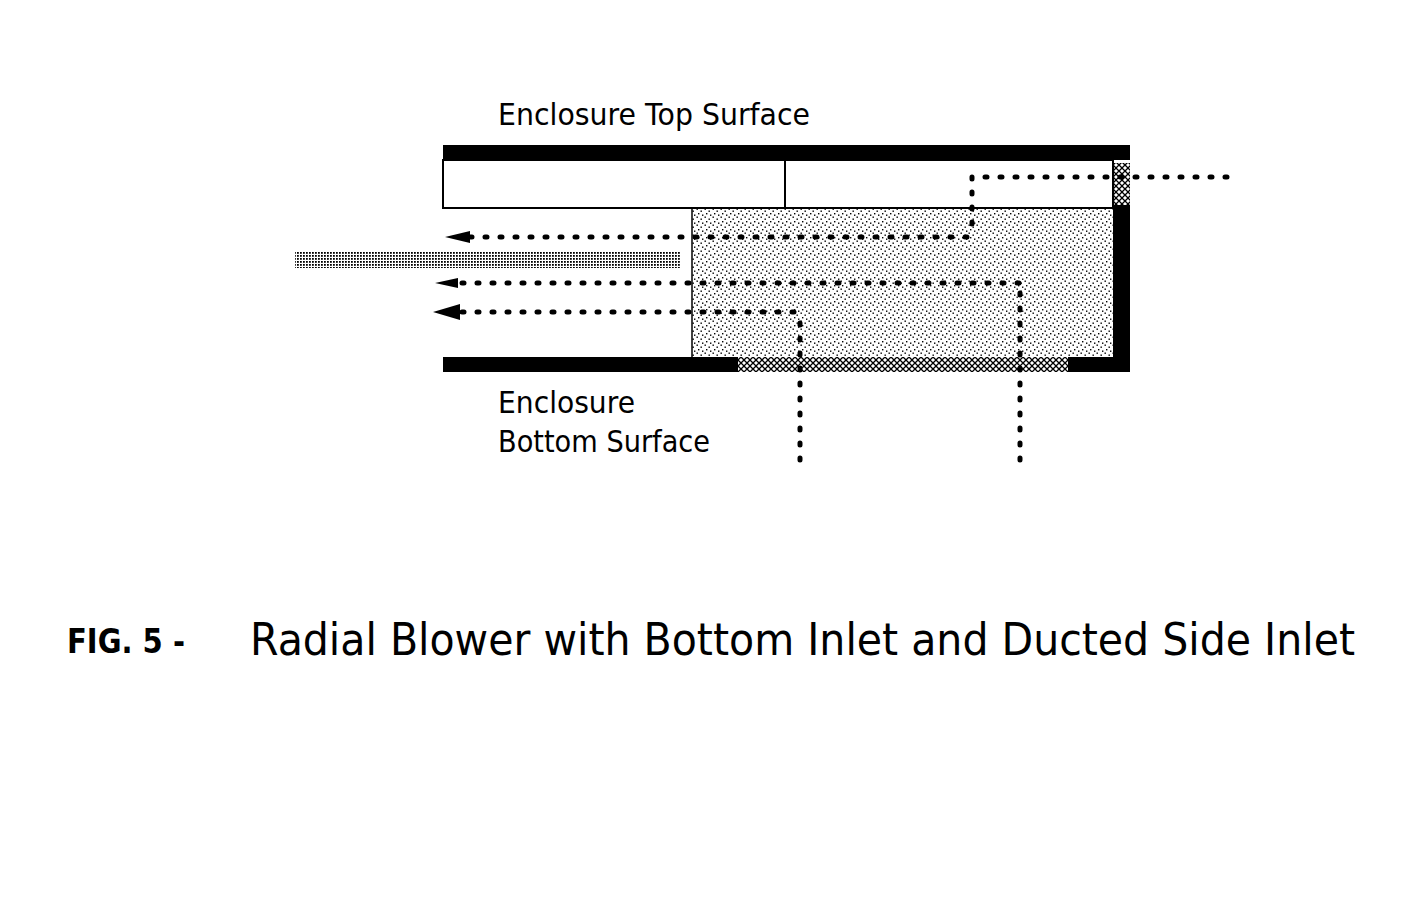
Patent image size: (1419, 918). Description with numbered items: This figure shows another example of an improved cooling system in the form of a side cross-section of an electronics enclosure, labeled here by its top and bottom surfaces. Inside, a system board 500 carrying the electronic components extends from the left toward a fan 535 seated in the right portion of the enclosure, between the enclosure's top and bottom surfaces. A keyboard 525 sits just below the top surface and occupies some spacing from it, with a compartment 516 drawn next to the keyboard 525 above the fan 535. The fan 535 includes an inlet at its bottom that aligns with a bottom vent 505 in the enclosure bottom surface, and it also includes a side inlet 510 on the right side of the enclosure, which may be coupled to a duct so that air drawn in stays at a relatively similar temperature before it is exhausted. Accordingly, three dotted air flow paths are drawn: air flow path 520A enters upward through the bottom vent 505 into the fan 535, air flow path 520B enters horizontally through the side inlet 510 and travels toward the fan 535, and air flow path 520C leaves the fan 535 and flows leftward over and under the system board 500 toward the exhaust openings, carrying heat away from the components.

The system board 500 is at (310, 225).
The bottom vent 505 is at (945, 400).
The side inlet 510 is at (1160, 196).
The duct 516 is at (949, 184).
The air flow path 520A is at (1030, 508).
The air flow path 520B is at (1307, 87).
The air flow path 520C is at (428, 316).
The keyboard 525 is at (614, 184).
The fan 535 is at (902, 282).